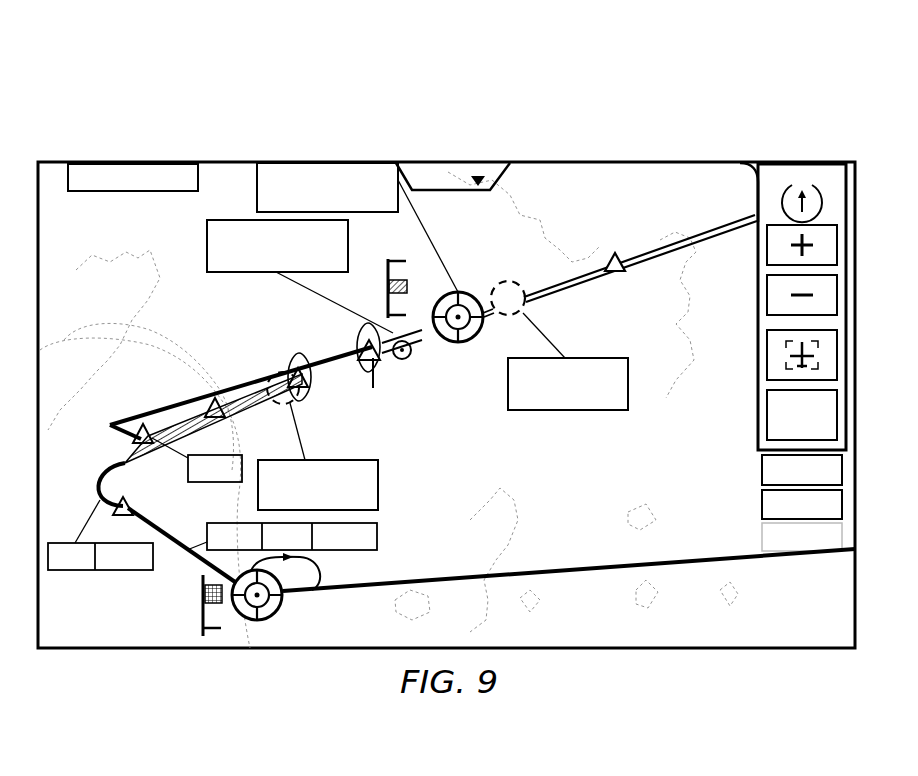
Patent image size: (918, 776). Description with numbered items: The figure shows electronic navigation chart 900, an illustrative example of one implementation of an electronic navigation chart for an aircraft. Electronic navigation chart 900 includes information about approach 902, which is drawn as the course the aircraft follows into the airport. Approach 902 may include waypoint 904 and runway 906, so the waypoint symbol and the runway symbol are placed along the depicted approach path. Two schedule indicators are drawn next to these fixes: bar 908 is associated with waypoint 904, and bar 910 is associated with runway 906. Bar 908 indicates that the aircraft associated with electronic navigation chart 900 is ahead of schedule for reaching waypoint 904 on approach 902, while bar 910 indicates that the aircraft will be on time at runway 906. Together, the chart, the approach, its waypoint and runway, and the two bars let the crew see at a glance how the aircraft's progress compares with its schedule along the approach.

The electronic navigation chart 900 is at (258, 102).
The approach 902 is at (219, 375).
The waypoint 904 is at (283, 606).
The runway 906 is at (468, 293).
The bar 908 is at (200, 609).
The bar 910 is at (386, 298).